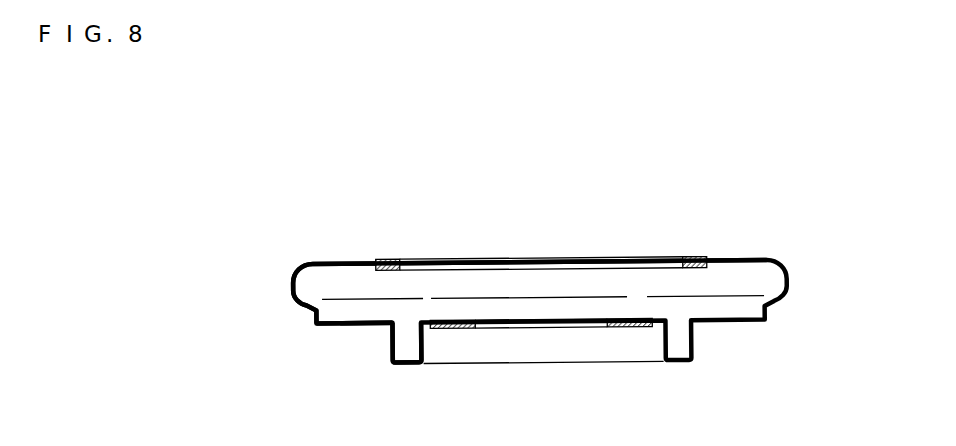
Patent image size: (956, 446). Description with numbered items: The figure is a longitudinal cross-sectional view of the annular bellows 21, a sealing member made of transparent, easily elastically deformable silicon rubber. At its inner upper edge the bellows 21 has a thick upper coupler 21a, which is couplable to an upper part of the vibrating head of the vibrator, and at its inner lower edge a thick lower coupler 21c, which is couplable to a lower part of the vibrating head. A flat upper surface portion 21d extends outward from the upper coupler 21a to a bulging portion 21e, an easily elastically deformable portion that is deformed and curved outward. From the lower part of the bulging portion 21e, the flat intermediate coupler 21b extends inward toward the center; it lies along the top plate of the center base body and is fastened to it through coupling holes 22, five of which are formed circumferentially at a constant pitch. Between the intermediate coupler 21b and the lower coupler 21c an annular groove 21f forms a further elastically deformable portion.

The annular bellows 21 is at (722, 245).
The upper coupler 21a is at (385, 259).
The intermediate coupler 21b is at (333, 327).
The lower coupler 21c is at (462, 328).
The flat upper surface portion 21d is at (333, 261).
The bulging portion 21e is at (291, 283).
The groove 21f is at (405, 363).
The coupling holes 22 is at (358, 327).